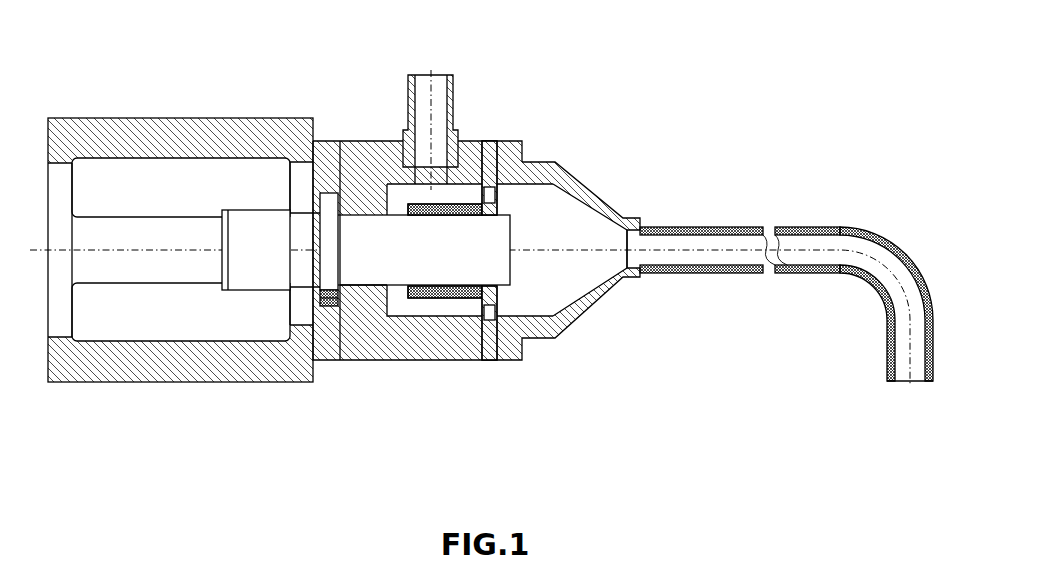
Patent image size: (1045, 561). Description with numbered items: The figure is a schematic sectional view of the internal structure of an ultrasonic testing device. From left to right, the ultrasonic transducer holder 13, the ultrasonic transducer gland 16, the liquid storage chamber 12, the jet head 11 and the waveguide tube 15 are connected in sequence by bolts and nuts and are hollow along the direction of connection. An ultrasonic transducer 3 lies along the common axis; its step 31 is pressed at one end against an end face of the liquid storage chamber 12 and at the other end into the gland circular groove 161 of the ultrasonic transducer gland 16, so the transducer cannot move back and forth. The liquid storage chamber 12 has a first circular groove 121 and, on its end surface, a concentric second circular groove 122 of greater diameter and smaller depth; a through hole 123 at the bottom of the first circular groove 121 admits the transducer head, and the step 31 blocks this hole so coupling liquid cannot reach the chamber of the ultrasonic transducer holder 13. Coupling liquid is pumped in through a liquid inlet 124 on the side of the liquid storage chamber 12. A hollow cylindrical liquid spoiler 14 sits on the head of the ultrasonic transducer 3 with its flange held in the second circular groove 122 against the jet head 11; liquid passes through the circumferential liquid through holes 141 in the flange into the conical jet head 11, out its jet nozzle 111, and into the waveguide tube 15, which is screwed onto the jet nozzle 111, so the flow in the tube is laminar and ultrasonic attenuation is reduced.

The ultrasonic transducer 3 is at (310, 253).
The step 31 is at (327, 293).
The jet head 11 is at (589, 192).
The jet nozzle 111 is at (642, 274).
The liquid storage chamber 12 is at (375, 162).
The first circular groove 121 is at (480, 300).
The second circular groove 122 is at (486, 178).
The through hole 123 is at (369, 286).
The liquid inlet 124 is at (437, 102).
The ultrasonic transducer holder 13 is at (186, 138).
The liquid spoiler 14 is at (427, 298).
The liquid through holes 141 is at (497, 300).
The waveguide tube 15 is at (702, 243).
The ultrasonic transducer gland 16 is at (317, 197).
The gland circular groove 161 is at (318, 196).